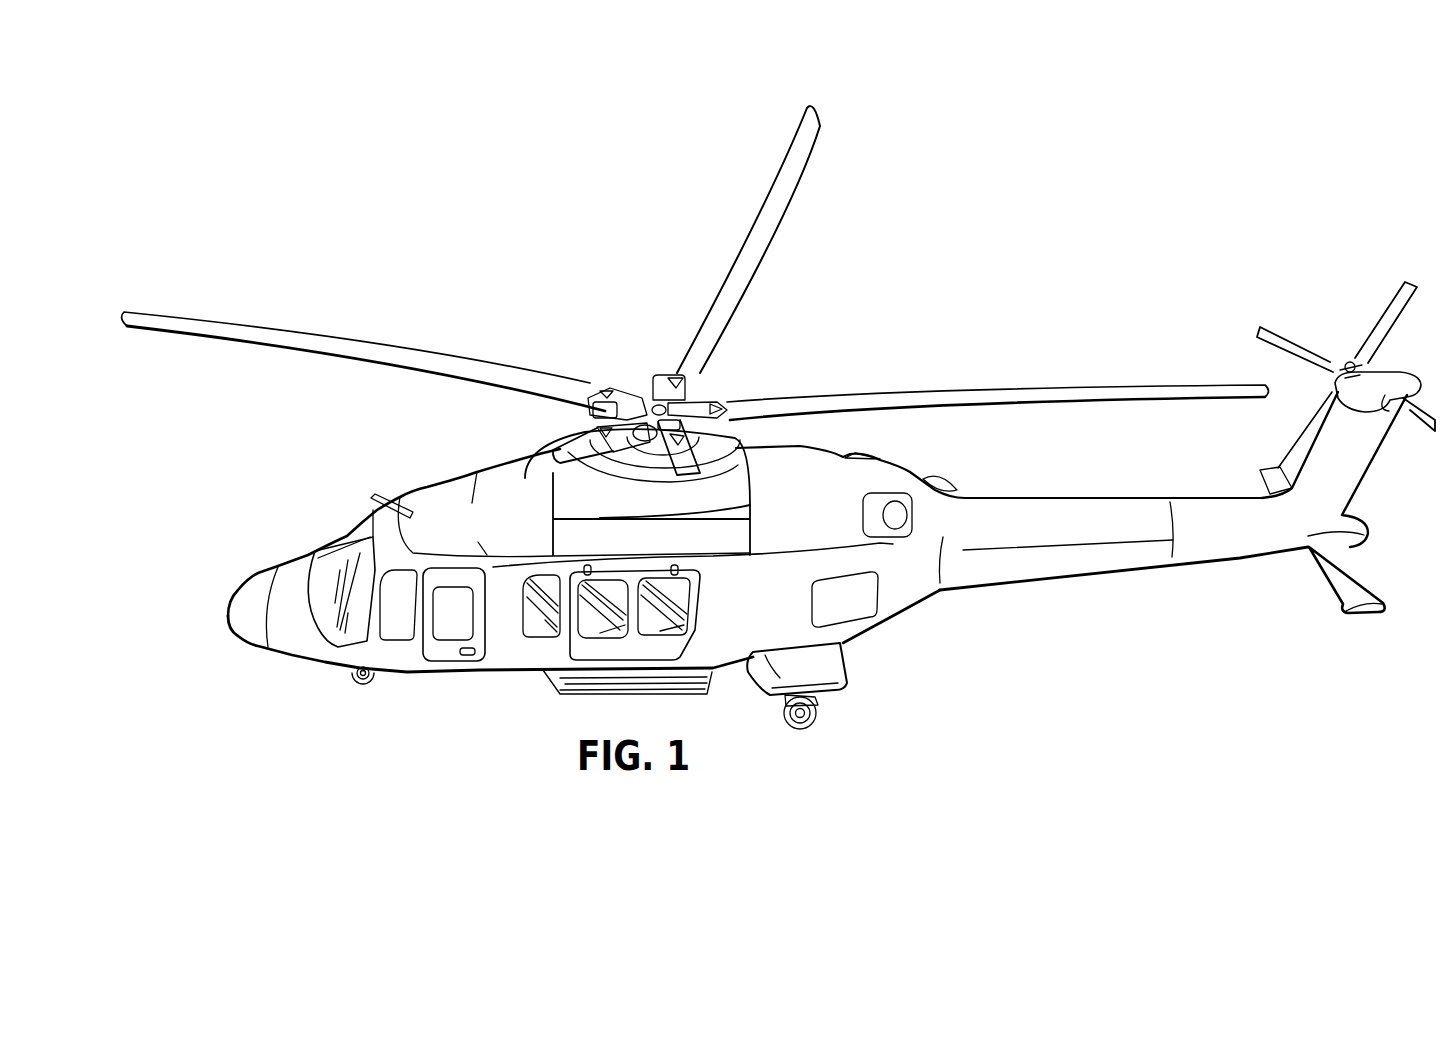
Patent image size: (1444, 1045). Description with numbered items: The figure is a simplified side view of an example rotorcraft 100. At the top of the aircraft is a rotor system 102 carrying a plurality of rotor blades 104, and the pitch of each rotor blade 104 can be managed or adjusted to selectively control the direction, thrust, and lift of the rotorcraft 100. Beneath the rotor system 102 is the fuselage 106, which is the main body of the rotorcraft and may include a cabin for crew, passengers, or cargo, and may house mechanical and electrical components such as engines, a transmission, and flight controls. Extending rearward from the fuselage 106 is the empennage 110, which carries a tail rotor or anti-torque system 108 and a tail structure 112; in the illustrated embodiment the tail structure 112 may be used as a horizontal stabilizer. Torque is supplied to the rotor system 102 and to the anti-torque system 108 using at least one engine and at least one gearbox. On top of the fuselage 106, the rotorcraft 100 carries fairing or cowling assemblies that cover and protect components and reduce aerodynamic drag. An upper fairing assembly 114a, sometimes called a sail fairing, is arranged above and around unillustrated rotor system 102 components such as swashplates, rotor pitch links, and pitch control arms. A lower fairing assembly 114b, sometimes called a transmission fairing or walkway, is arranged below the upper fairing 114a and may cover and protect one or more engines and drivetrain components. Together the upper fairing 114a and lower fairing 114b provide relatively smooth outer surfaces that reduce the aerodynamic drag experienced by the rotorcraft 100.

The rotorcraft 100 is at (454, 158).
The rotor system 102 is at (628, 354).
The rotor blades 104 is at (343, 342).
The fuselage 106 is at (403, 670).
The tail rotor or anti-torque system 108 is at (1324, 308).
The empennage 110 is at (1140, 568).
The tail structure 112 is at (1357, 578).
The upper fairing assembly 114a is at (731, 477).
The lower fairing assembly 114b is at (570, 535).